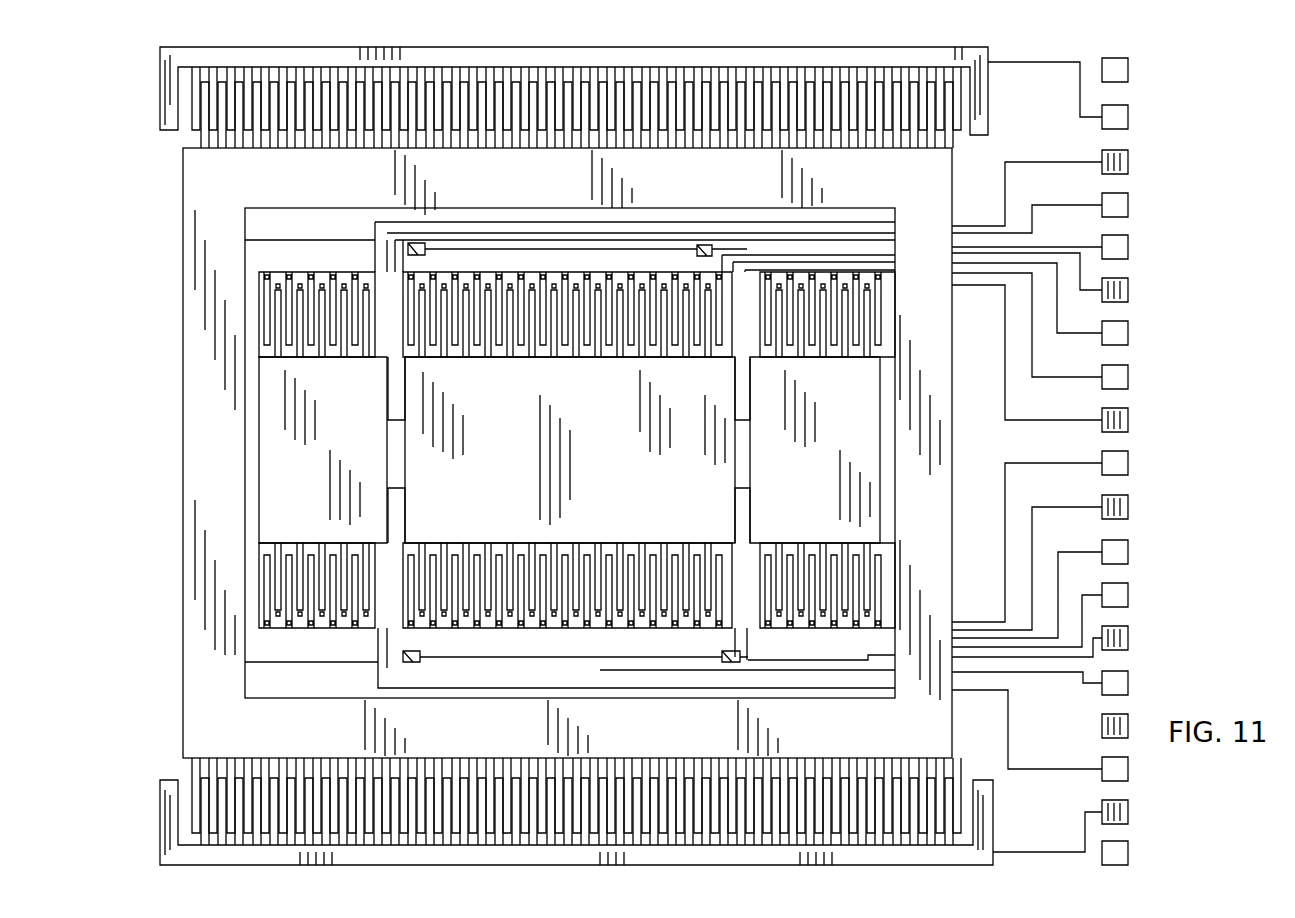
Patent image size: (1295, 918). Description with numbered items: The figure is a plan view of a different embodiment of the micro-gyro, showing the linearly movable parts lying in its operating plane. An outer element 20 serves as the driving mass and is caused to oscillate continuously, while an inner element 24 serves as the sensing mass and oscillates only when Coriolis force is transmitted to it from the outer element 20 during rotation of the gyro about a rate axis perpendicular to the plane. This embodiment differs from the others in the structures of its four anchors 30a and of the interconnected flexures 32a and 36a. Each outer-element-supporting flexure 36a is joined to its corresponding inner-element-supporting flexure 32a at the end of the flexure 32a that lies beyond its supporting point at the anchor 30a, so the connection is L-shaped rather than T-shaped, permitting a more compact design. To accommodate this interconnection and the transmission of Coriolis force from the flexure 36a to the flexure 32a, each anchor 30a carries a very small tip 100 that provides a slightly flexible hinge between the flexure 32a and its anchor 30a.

The outer element 20 is at (193, 408).
The inner element 24 is at (295, 512).
The anchor 30a is at (425, 250).
The inner-element-supporting flexure 32a is at (388, 372).
The outer-element-supporting flexure 36a is at (278, 237).
The tip 100 is at (405, 247).